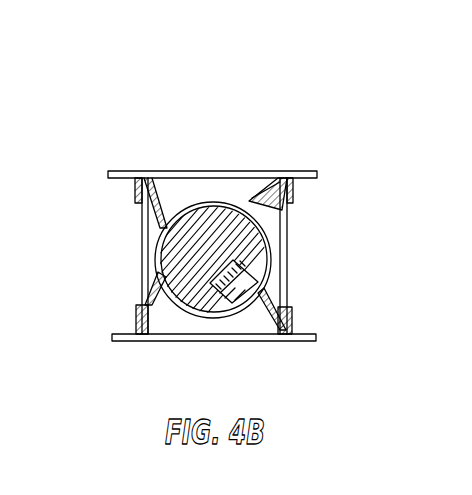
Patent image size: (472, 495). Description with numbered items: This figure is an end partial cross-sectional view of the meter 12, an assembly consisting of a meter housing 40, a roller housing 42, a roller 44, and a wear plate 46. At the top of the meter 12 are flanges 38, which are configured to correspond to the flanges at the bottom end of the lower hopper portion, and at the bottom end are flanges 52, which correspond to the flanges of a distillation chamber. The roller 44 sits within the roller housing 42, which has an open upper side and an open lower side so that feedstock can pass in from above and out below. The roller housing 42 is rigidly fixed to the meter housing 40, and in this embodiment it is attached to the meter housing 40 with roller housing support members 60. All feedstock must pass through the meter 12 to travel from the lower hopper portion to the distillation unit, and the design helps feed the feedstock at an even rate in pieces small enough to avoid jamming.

The meter 12 is at (327, 82).
The flanges 38 is at (127, 171).
The meter housing 40 is at (141, 275).
The roller housing 42 is at (210, 320).
The roller 44 is at (213, 225).
The wear plate 46 is at (258, 188).
The flanges 52 is at (127, 342).
The roller housing support members 60 is at (143, 211).